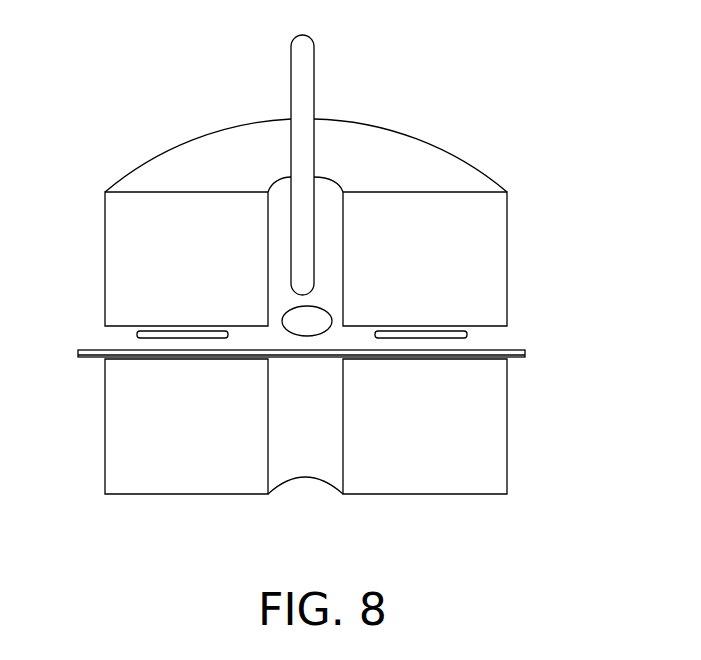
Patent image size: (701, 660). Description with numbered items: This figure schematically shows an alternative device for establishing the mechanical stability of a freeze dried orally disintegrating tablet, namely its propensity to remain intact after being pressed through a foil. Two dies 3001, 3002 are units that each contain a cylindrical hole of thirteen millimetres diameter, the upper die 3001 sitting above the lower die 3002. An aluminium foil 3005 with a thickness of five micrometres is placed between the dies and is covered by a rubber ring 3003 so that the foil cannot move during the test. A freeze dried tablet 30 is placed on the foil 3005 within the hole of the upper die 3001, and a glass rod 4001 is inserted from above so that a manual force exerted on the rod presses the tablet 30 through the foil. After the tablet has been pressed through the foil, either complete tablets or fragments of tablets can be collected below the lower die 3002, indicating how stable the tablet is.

The glass rod 4001 is at (305, 72).
The die 3001 is at (507, 228).
The die 3002 is at (507, 478).
The rubber ring 3003 is at (137, 333).
The aluminium foil 3005 is at (525, 355).
The freeze dried tablet 30 is at (330, 322).